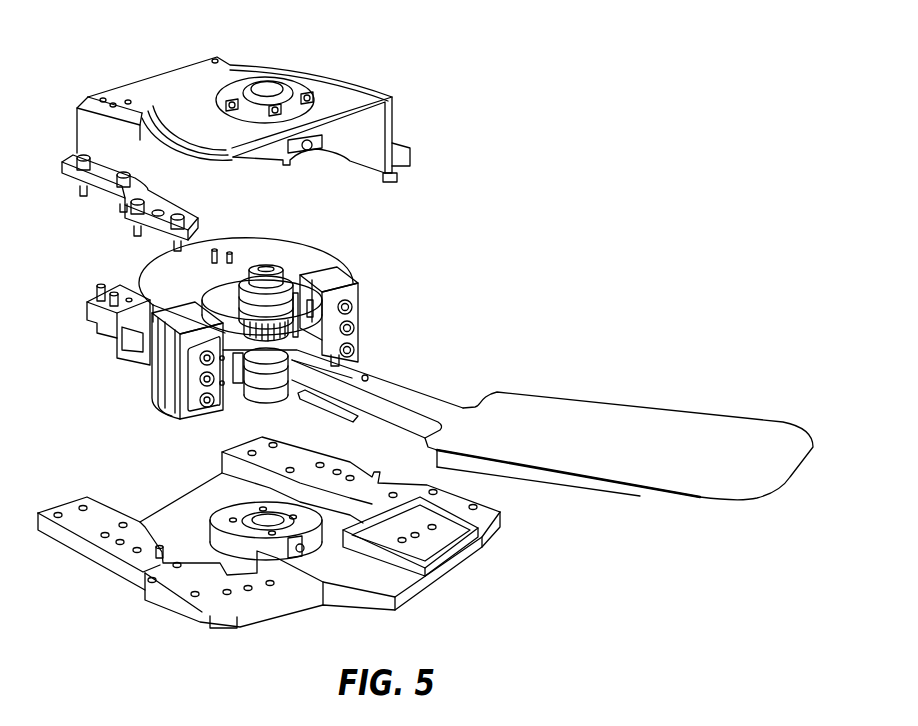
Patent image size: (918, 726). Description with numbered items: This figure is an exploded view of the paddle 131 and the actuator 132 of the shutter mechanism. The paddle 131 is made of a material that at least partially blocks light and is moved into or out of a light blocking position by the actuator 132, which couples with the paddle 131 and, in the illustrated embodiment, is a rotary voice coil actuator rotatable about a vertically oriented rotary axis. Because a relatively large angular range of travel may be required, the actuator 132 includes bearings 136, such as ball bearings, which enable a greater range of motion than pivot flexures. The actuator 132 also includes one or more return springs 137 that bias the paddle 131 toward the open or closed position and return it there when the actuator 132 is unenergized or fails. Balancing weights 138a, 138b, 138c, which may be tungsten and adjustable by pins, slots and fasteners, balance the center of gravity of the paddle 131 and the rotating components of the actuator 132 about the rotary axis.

The paddle 131 is at (637, 425).
The actuator 132 is at (141, 63).
The bearings 136 is at (300, 290).
The return springs 137 is at (357, 278).
The balancing weight 138a is at (360, 363).
The balancing weight 138b is at (330, 317).
The balancing weight 138c is at (183, 373).